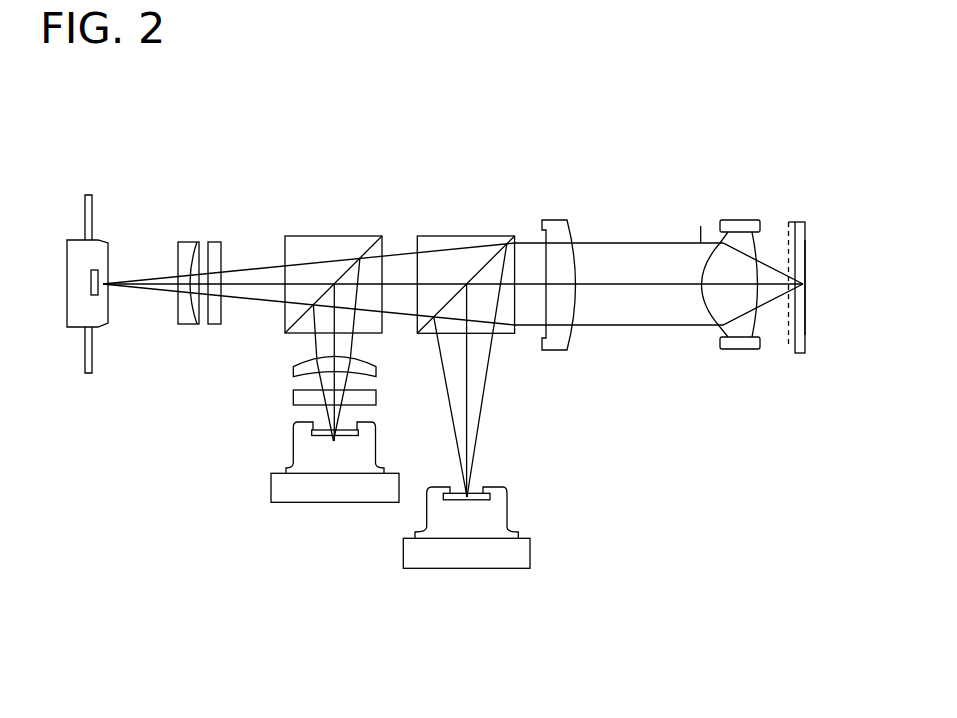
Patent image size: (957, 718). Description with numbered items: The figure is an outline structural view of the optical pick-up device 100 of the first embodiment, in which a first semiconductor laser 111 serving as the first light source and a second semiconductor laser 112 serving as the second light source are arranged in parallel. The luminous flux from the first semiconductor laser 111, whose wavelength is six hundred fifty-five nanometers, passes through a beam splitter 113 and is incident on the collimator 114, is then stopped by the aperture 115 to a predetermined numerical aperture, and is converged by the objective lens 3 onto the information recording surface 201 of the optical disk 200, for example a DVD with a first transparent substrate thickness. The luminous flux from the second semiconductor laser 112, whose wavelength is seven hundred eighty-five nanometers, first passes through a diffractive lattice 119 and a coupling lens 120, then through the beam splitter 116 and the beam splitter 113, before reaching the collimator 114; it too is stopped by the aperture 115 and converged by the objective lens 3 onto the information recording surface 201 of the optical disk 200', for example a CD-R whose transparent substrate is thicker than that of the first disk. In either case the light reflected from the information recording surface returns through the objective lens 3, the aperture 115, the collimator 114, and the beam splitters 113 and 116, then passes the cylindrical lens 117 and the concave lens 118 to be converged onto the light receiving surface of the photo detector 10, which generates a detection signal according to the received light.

The optical pick-up device 100 is at (634, 191).
The photo detector 10 is at (88, 377).
The concave lens 118 is at (187, 327).
The cylindrical lens 117 is at (219, 237).
The beam splitter 116 is at (363, 233).
The beam splitter 113 is at (466, 233).
The collimator 114 is at (553, 353).
The aperture 115 is at (702, 328).
The objective lens 3 is at (736, 218).
The optical disk 200 is at (830, 287).
The information recording surface 201 is at (806, 306).
The optical disk 200' is at (789, 317).
The coupling lens 120 is at (360, 370).
The diffractive lattice 119 is at (360, 399).
The second semiconductor laser 112 is at (282, 505).
The first semiconductor laser 111 is at (500, 510).